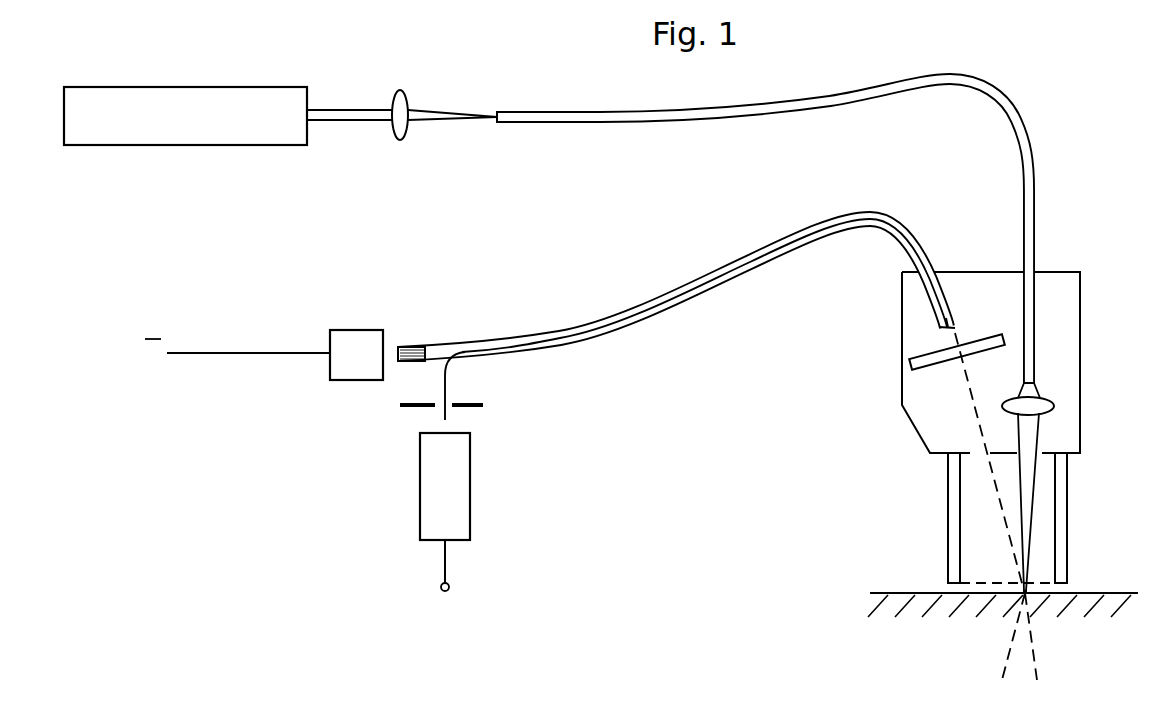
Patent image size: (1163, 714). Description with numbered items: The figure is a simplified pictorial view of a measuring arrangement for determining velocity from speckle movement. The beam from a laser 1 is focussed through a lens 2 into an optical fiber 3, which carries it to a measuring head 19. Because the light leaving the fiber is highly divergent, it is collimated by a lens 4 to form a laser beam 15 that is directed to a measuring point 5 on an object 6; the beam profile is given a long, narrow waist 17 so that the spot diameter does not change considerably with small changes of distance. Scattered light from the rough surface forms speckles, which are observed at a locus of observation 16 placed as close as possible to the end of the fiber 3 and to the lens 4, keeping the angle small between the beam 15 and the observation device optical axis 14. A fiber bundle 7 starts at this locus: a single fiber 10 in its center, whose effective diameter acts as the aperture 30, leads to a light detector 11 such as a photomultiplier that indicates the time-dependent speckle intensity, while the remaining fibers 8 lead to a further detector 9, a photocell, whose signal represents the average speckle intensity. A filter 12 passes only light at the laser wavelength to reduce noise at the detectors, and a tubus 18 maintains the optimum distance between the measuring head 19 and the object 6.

The laser 1 is at (200, 70).
The lens 2 is at (404, 92).
The optical fiber 3 is at (551, 110).
The lens 4 is at (1055, 403).
The measuring point 5 is at (1028, 590).
The object 6 is at (1096, 607).
The fiber bundle 7 is at (642, 326).
The remaining fibers 8 is at (427, 345).
The detector 9 is at (364, 367).
The single fiber 10 is at (450, 382).
The light detector 11 is at (456, 501).
The filter 12 is at (912, 365).
The observation device optical axis 14 is at (990, 483).
The laser beam 15 is at (1025, 510).
The locus of observation 16 is at (950, 331).
The waist 17 is at (1036, 655).
The tubus 18 is at (948, 470).
The measuring head 19 is at (1082, 320).
The aperture 30 is at (960, 327).